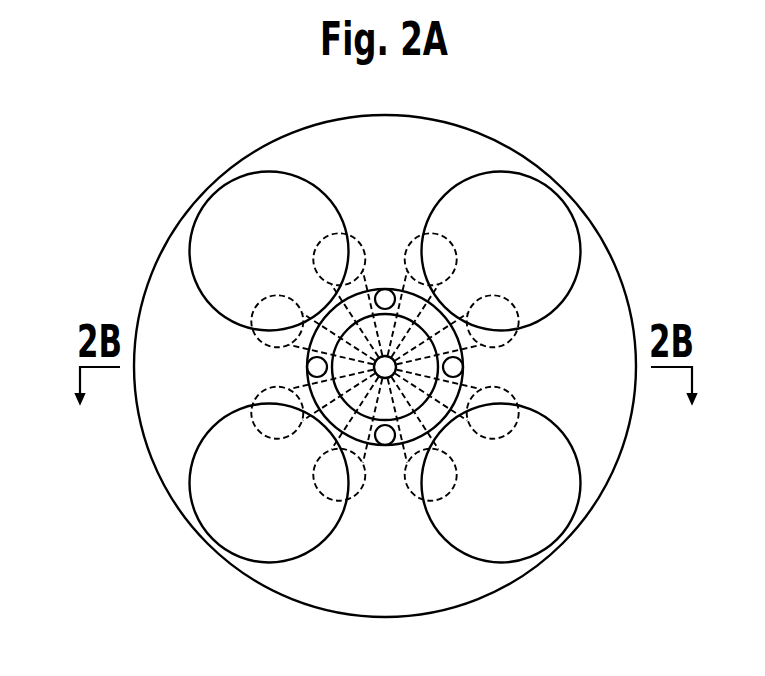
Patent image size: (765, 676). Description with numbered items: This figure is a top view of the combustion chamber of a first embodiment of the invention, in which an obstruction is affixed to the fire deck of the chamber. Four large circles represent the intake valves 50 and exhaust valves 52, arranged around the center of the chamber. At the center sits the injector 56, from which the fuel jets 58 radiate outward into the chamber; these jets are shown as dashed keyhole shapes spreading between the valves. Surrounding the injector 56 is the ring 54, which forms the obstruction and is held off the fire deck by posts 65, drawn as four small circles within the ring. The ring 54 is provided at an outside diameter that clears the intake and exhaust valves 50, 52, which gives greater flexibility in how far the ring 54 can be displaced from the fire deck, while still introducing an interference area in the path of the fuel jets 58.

The intake valves 50 is at (540, 303).
The exhaust valves 52 is at (237, 215).
The ring 54 is at (445, 318).
The injector 56 is at (395, 358).
The fuel jets 58 is at (308, 371).
The posts 65 is at (307, 366).